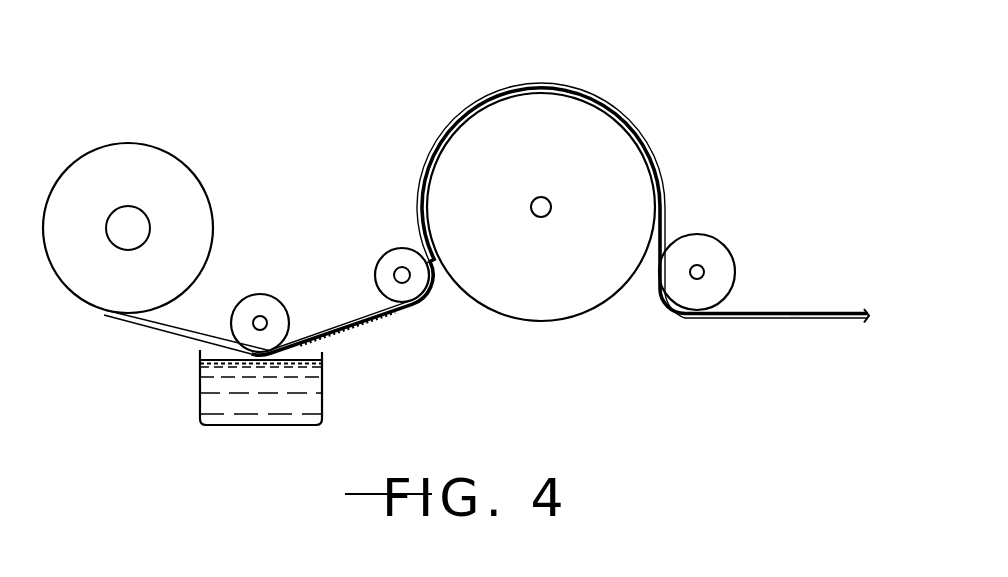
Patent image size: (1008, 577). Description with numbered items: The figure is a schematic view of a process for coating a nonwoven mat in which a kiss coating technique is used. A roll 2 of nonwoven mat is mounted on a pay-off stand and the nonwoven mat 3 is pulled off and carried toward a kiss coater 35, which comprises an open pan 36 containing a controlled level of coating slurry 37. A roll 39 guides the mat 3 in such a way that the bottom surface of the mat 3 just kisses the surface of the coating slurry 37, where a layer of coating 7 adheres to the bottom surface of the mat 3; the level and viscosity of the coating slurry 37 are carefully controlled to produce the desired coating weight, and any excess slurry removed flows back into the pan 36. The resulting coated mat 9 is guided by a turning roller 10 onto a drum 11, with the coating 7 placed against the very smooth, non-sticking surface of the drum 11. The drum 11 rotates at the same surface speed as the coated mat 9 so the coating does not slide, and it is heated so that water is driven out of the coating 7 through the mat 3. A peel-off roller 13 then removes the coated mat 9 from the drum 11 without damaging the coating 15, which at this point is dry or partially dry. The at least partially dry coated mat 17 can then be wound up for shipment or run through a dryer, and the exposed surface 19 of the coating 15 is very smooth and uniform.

The roll of nonwoven mat 2 is at (190, 170).
The nonwoven mat 3 is at (196, 330).
The roll 39 is at (272, 308).
The coated mat 9 is at (385, 309).
The coating 7 is at (396, 316).
The turning roller 10 is at (398, 261).
The drum 11 is at (457, 165).
The peel-off roller 13 is at (714, 258).
The coating 15 is at (648, 267).
The at least partially dry coated mat 17 is at (749, 318).
The exposed surface 19 is at (812, 320).
The open pan 36 is at (198, 384).
The coating slurry 37 is at (308, 393).
The kiss coater 35 is at (200, 420).